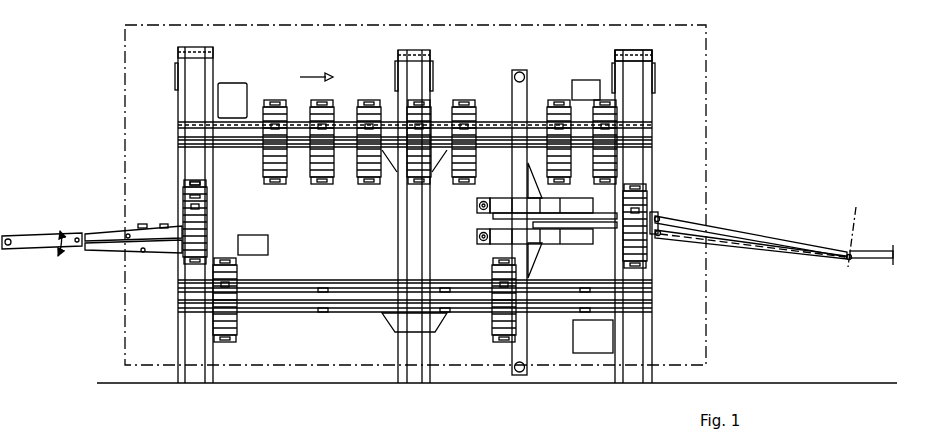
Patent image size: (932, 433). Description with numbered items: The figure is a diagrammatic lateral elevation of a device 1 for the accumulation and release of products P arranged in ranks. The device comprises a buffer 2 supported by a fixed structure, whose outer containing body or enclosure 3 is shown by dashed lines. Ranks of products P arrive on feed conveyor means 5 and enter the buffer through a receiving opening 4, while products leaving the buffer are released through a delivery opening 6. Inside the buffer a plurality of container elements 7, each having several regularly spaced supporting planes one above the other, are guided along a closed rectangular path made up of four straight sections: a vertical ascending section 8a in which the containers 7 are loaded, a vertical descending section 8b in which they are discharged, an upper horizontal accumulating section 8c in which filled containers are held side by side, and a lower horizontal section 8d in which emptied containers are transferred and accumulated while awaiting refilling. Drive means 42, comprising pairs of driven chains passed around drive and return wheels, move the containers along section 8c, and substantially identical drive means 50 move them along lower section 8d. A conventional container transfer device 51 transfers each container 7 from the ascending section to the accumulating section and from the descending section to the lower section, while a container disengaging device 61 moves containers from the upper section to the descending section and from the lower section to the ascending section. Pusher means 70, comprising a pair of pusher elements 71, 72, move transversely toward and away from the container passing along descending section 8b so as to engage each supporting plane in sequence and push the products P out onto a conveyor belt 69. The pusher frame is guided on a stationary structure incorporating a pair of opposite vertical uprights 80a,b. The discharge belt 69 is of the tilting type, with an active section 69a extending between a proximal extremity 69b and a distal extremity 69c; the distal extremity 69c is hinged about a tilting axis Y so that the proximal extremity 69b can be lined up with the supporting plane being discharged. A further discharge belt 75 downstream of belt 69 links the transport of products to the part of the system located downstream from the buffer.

The device for the accumulation and release of products 1 is at (746, 80).
The buffer 2 is at (662, 84).
The outer containing body or enclosure 3 is at (630, 27).
The receiving opening 4 is at (180, 262).
The feed conveyor means 5 is at (68, 220).
The delivery opening 6 is at (658, 205).
The container elements 7 is at (285, 110).
The ascending section 8a is at (170, 138).
The descending section 8b is at (658, 162).
The accumulating section 8c is at (494, 162).
The lower transfer section 8d is at (452, 316).
The drive means 42 is at (440, 112).
The drive means 50 is at (360, 318).
The container transfer device 51 is at (231, 88).
The container disengaging device 61 is at (582, 85).
The conveyor belt 69 is at (765, 252).
The active section 69a is at (745, 231).
The proximal extremity 69b is at (658, 220).
The distal extremity 69c is at (848, 259).
The pusher means 70 is at (547, 289).
The pusher element 71 is at (603, 213).
The pusher element 72 is at (607, 233).
The further discharge belt 75 is at (870, 250).
The vertical uprights 80a,b is at (523, 100).
The products P is at (141, 223).
The tilting axis Y is at (855, 231).